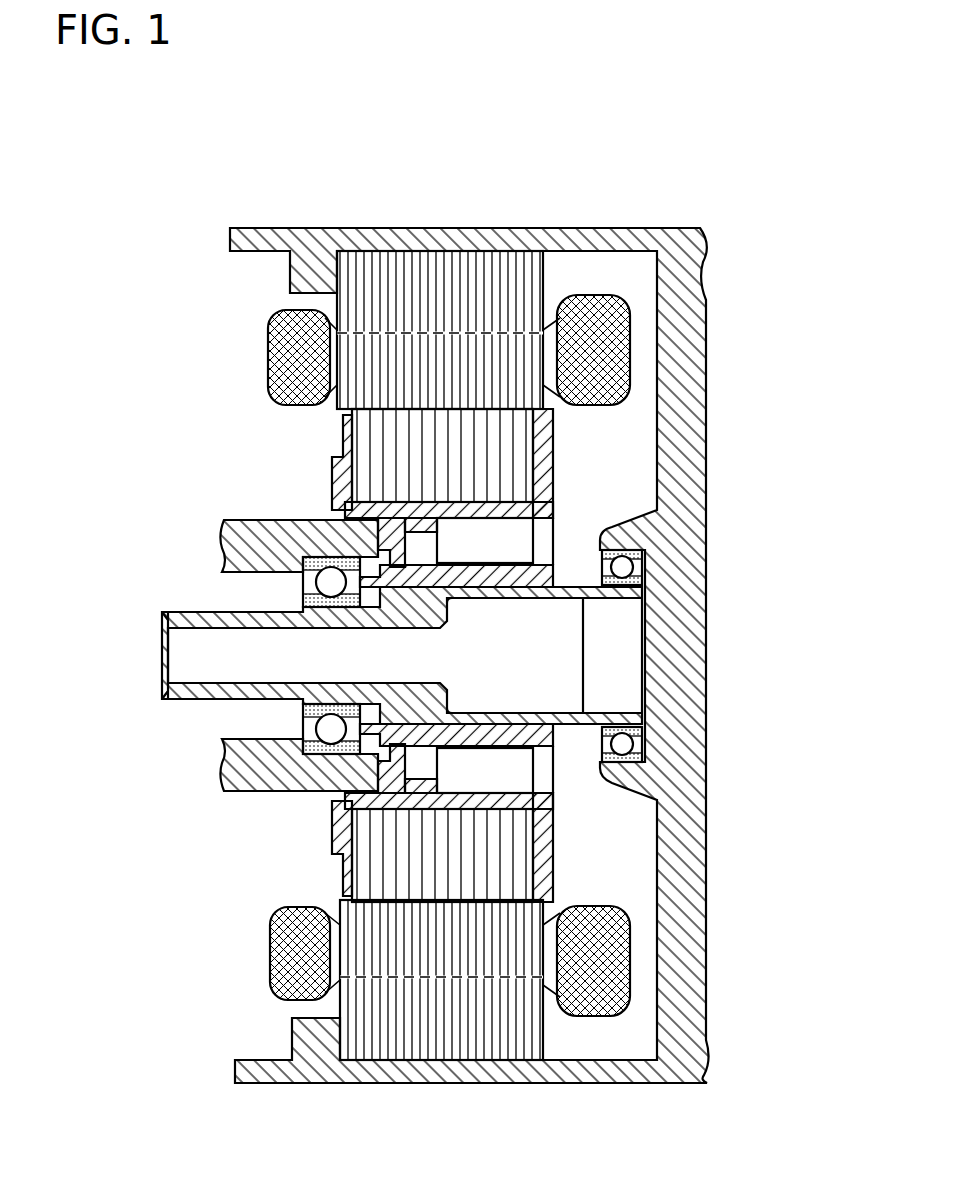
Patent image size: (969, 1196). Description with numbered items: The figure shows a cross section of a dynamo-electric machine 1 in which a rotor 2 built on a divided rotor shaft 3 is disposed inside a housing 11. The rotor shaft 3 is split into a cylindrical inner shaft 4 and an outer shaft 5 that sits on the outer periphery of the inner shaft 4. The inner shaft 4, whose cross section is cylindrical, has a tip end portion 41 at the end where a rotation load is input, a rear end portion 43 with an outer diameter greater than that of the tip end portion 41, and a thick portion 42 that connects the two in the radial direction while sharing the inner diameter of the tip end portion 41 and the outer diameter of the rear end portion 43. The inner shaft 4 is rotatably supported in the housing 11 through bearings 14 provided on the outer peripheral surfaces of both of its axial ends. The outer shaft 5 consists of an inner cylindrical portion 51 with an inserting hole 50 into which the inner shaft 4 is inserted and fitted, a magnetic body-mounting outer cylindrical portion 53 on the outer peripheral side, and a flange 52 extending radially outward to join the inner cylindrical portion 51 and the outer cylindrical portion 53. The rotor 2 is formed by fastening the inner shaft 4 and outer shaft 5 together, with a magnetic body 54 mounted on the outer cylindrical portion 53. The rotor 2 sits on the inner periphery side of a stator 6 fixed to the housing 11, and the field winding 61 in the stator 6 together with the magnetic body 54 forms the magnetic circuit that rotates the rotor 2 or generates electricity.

The dynamo-electric machine 1 is at (210, 985).
The rotor 2 is at (560, 447).
The rotor shaft 3 is at (178, 707).
The inner shaft 4 is at (215, 610).
The outer shaft 5 is at (325, 845).
The stator 6 is at (597, 292).
The housing 11 is at (690, 346).
The bearings 14 is at (623, 567).
The tip end portion 41 is at (180, 612).
The thick portion 42 is at (413, 598).
The rear end portion 43 is at (493, 590).
The inserting hole 50 is at (527, 720).
The inner cylindrical portion 51 is at (423, 773).
The flange 52 is at (490, 737).
The magnetic body-mounting outer cylindrical portion 53 is at (472, 800).
The magnetic body 54 is at (497, 873).
The field winding 61 is at (286, 343).